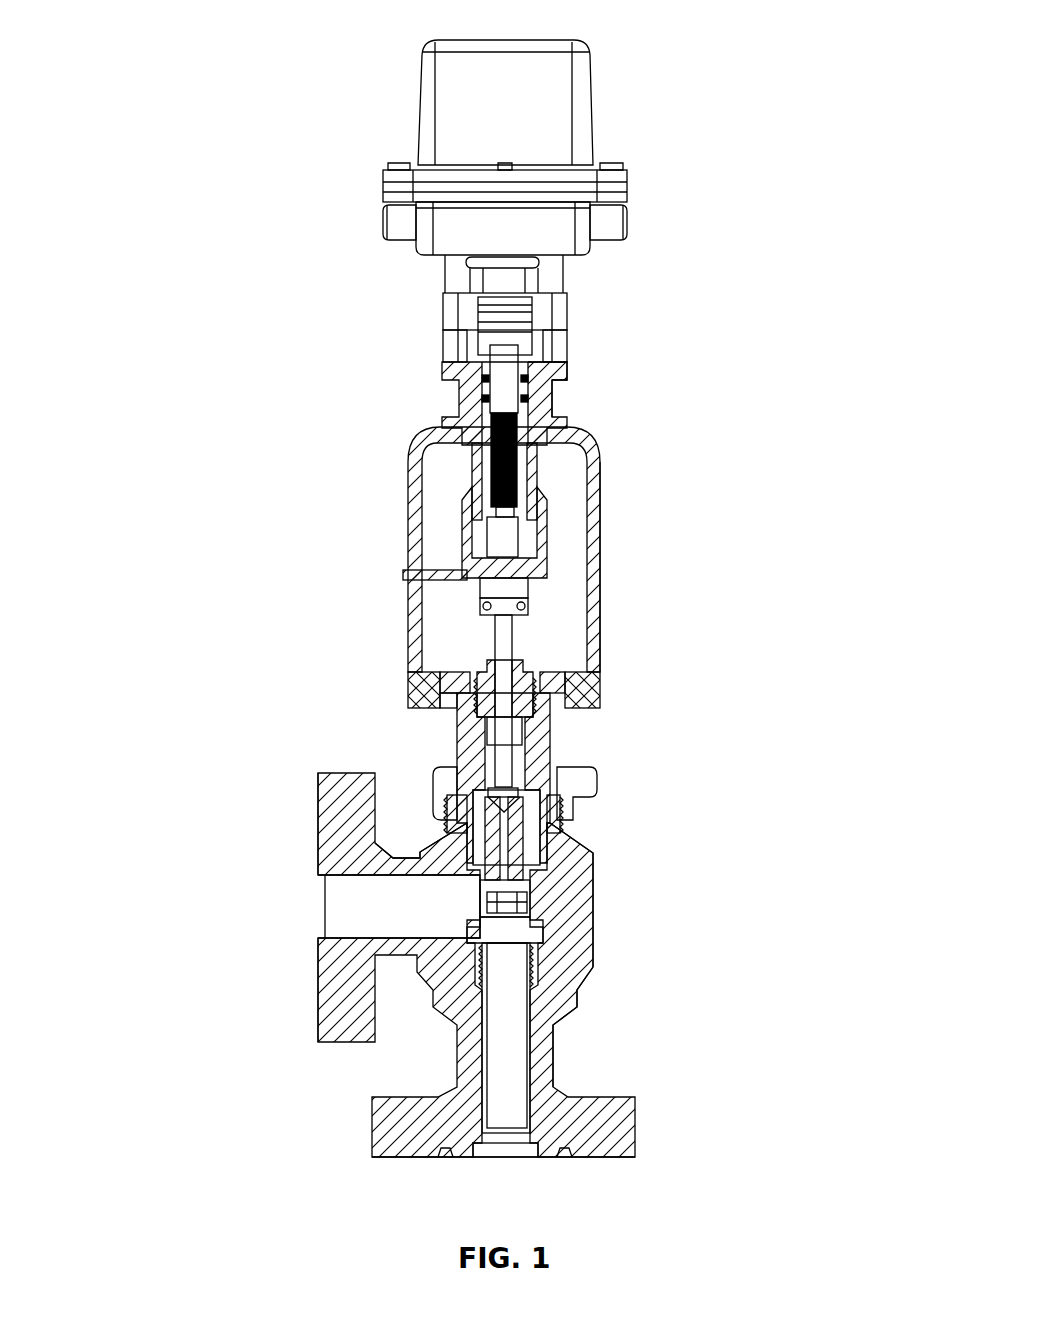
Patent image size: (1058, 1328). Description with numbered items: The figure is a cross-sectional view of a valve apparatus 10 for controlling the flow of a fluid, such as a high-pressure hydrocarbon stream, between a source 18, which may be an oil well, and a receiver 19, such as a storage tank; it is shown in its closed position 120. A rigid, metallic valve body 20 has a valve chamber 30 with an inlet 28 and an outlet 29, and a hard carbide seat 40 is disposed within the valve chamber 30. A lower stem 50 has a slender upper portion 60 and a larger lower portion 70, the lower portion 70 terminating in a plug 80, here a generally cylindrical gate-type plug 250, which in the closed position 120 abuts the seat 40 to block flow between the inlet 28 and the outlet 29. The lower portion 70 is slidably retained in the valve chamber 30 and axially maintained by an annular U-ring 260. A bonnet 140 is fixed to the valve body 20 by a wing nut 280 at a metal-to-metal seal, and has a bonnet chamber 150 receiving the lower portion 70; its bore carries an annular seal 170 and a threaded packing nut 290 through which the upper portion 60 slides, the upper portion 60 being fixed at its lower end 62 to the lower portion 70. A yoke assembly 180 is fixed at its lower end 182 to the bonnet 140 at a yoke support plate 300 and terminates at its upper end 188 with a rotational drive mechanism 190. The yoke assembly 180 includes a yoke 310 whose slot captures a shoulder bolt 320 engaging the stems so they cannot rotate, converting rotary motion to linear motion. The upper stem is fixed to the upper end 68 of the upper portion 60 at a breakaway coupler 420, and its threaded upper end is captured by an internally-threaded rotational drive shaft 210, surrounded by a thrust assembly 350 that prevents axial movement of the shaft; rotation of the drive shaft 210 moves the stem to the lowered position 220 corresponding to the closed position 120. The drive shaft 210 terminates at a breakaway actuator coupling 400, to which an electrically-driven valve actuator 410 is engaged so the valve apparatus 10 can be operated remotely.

The valve apparatus 10 is at (353, 20).
The electrically-driven valve actuator 410 is at (442, 70).
The breakaway actuator coupling 400 is at (492, 345).
The rotational drive shaft 210 is at (482, 382).
The thrust assembly 350 is at (547, 368).
The rotational drive mechanism 190 is at (556, 388).
The lowered position 220 is at (451, 404).
The yoke assembly 180 is at (408, 435).
The upper end of yoke assembly 188 is at (584, 440).
The lower end of yoke assembly 182 is at (600, 640).
The yoke 310 is at (414, 500).
The shoulder bolt 320 is at (437, 568).
The breakaway coupler 420 is at (505, 648).
The upper end of upper portion 68 is at (522, 612).
The upper portion of lower stem 60 is at (585, 680).
The annular seal 170 is at (410, 683).
The yoke support plate 300 is at (440, 670).
The packing nut 290 is at (483, 735).
The bonnet chamber 150 is at (487, 766).
The bonnet 140 is at (542, 747).
The lower end of upper portion 62 is at (508, 785).
The wing nut 280 is at (440, 778).
The lower stem 50 is at (532, 800).
The lower portion of lower stem 70 is at (532, 897).
The plug 80 is at (480, 958).
The seat 40 is at (532, 955).
The closed position 120 is at (585, 875).
The valve body 20 is at (423, 854).
The annular U-ring 260 is at (569, 878).
The gate-type plug 250 is at (566, 960).
The valve chamber 30 is at (383, 902).
The inlet 28 is at (321, 898).
The source 18 is at (290, 907).
The receiver 19 is at (498, 1172).
The outlet 29 is at (530, 1158).